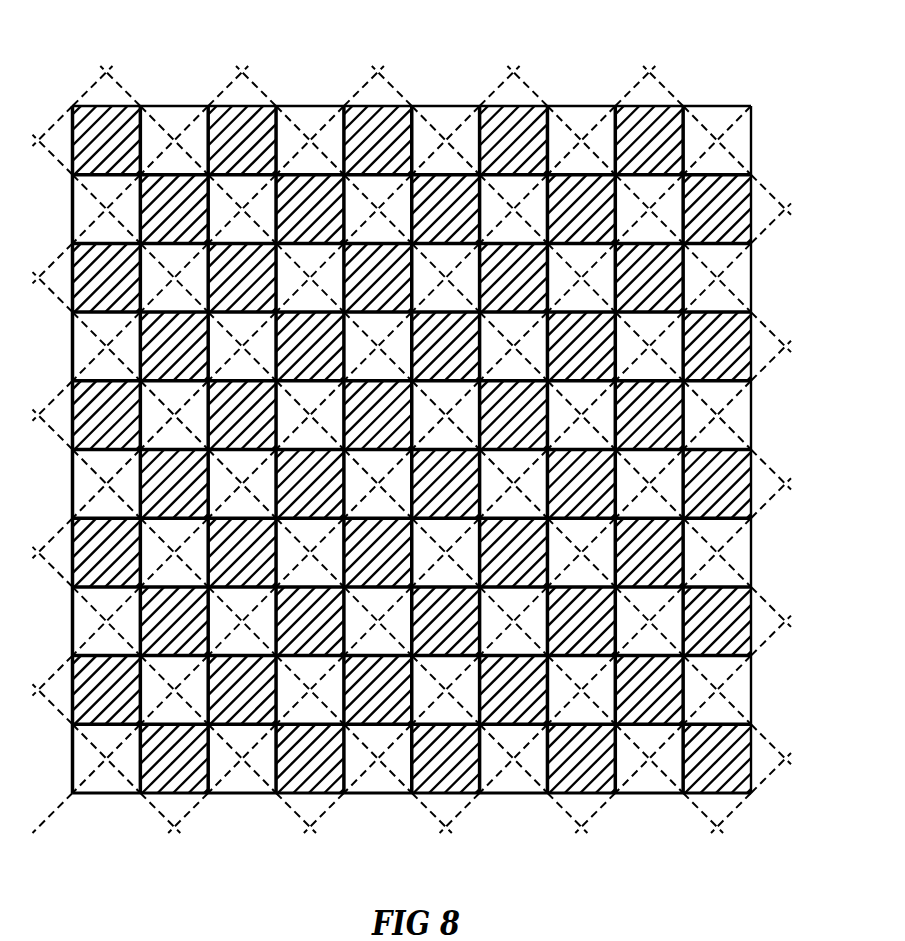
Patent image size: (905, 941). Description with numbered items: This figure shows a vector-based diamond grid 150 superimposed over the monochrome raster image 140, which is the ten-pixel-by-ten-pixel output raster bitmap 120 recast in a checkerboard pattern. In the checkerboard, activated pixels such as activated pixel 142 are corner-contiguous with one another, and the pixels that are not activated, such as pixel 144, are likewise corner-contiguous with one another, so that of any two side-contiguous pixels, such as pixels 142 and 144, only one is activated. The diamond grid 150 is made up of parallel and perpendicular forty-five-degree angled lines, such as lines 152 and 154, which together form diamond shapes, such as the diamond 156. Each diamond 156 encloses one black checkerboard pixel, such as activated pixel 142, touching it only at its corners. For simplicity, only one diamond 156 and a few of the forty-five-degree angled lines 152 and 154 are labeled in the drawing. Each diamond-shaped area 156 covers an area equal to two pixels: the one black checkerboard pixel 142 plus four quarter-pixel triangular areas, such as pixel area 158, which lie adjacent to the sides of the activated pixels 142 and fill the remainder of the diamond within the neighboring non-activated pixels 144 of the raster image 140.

The output raster bitmap 120 is at (647, 793).
The monochrome raster image 140 is at (452, 105).
The activated pixel 142 is at (658, 108).
The pixel that is not activated 144 is at (753, 143).
The vector-based diamond grid 150 is at (457, 456).
The 45-degree angled line 152 is at (103, 68).
The 45-degree angled line 154 is at (436, 423).
The diamond 156 is at (436, 423).
The pixel area 158 is at (652, 188).